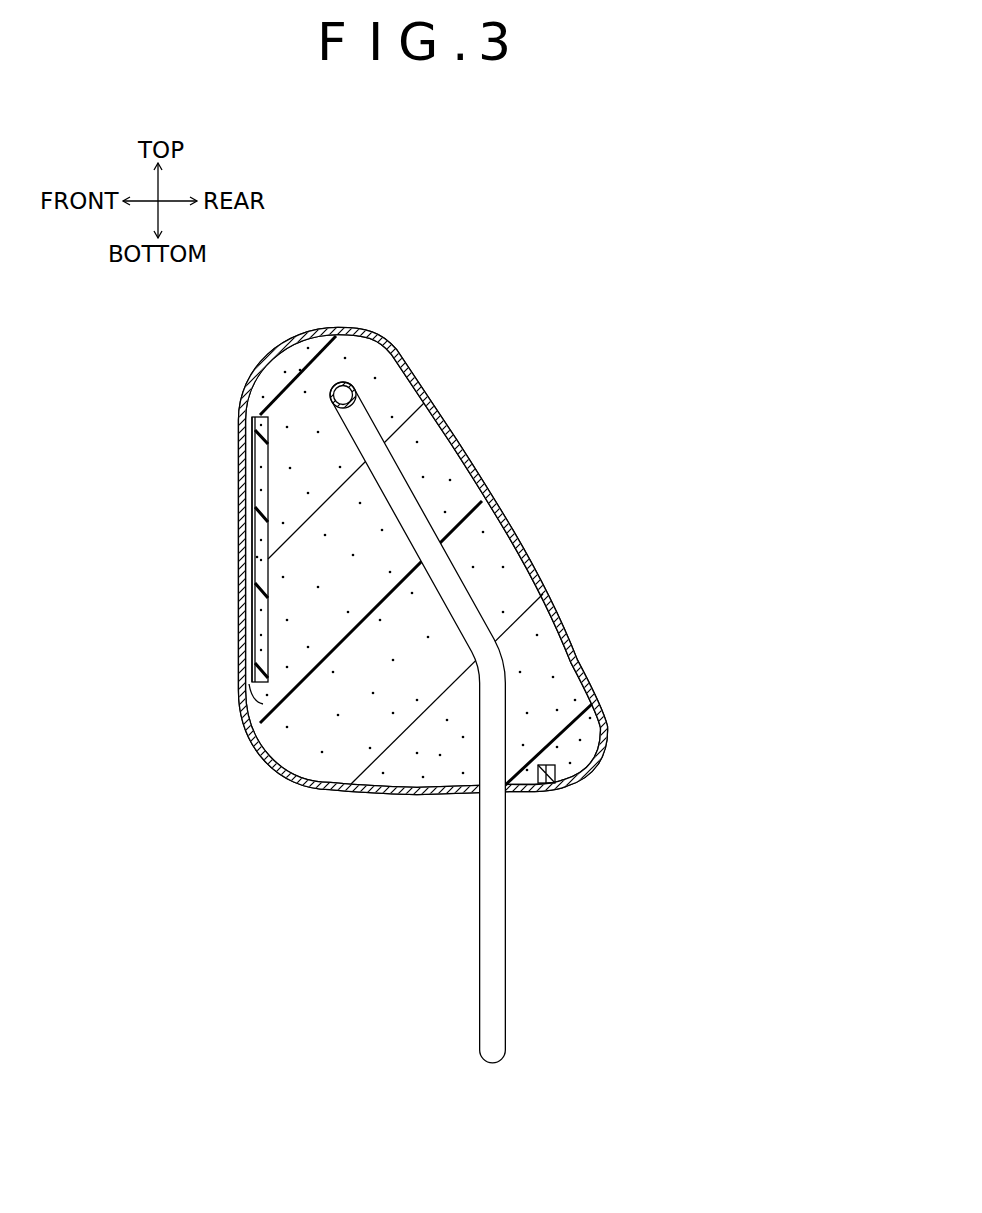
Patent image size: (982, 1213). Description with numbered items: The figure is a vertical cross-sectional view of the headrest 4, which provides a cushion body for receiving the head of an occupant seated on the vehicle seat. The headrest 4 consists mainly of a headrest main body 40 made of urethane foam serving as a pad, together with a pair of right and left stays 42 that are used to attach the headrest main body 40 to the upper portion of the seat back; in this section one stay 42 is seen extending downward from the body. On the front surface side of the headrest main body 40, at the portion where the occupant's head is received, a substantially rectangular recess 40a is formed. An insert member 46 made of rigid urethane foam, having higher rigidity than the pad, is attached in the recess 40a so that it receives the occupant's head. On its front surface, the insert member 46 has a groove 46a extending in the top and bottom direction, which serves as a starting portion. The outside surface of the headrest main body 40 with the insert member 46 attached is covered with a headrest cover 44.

The headrest 4 is at (432, 316).
The headrest main body 40 is at (495, 558).
The recess 40a is at (248, 713).
The stays 42 is at (497, 923).
The headrest cover 44 is at (457, 440).
The insert member 46 is at (257, 568).
The groove 46a is at (252, 487).